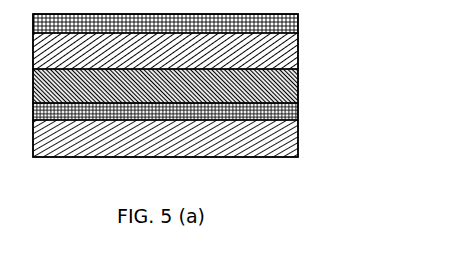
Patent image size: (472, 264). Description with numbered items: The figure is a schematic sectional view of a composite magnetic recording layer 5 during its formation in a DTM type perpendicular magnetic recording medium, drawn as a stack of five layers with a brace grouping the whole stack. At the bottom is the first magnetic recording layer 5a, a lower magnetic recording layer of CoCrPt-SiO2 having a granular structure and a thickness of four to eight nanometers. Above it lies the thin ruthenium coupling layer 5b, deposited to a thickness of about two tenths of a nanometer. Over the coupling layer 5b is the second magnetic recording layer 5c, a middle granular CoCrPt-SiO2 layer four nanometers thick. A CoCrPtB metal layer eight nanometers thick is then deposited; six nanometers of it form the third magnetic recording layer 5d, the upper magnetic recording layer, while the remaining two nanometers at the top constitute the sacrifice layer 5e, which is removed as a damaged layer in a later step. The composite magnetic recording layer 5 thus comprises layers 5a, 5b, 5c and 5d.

The composite magnetic recording layer 5 is at (219, 85).
The first magnetic recording layer 5a is at (196, 138).
The coupling layer 5b is at (292, 111).
The second magnetic recording layer 5c is at (282, 84).
The third magnetic recording layer 5d is at (286, 52).
The sacrifice layer 5e is at (288, 22).